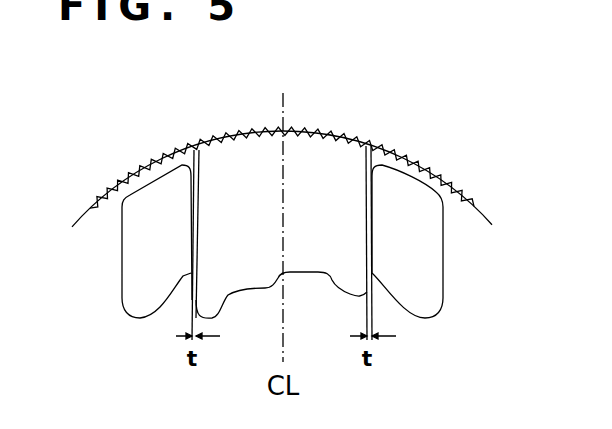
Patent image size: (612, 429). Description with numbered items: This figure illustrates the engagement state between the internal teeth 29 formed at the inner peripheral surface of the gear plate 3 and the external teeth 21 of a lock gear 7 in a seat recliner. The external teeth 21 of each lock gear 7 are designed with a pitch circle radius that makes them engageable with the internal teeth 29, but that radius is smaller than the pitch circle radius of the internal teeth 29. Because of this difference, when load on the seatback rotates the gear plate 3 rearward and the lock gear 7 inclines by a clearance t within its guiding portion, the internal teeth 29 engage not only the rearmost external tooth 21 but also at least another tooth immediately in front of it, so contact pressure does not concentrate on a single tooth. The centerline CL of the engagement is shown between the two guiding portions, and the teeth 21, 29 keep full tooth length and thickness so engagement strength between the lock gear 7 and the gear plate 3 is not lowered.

The gear plate 3 is at (307, 113).
The lock gear 7 is at (328, 164).
The external teeth 21 is at (223, 178).
The internal teeth 29 is at (215, 245).